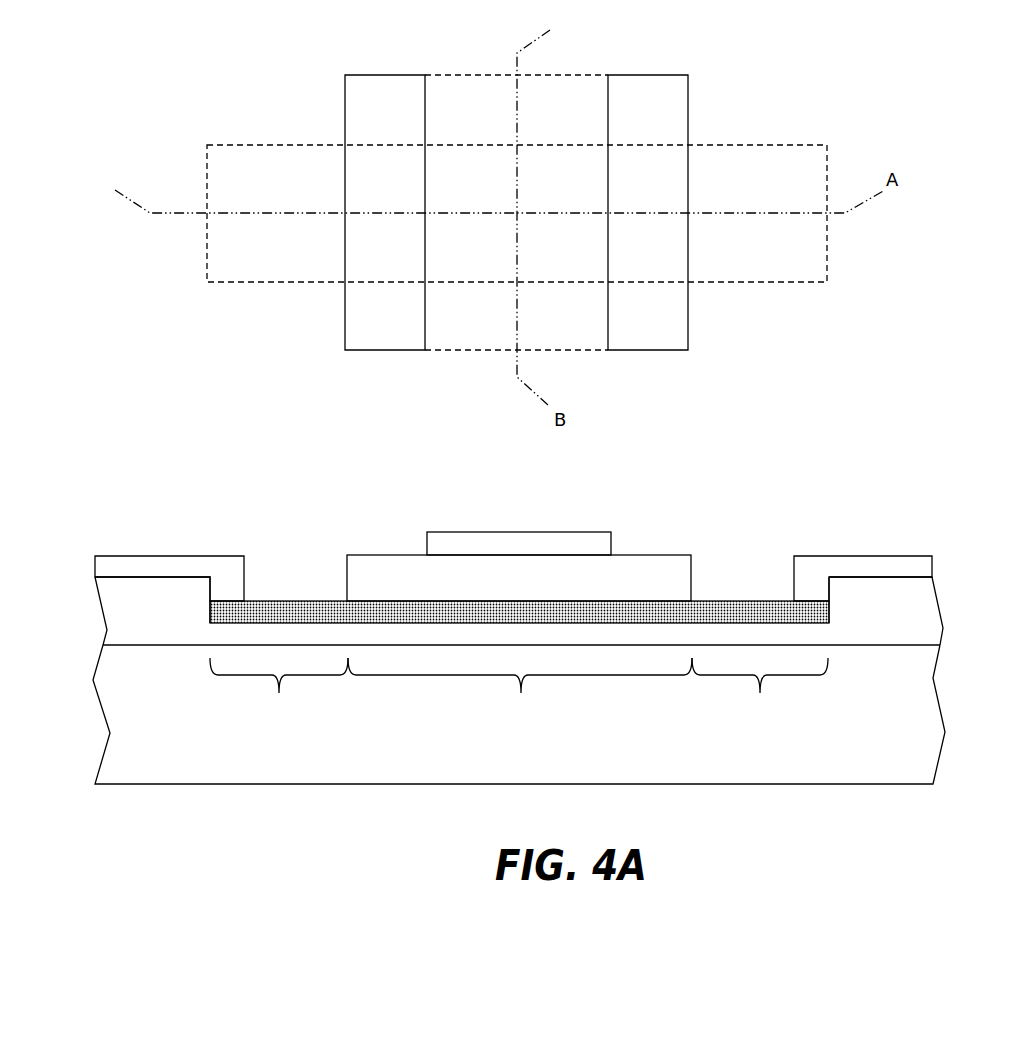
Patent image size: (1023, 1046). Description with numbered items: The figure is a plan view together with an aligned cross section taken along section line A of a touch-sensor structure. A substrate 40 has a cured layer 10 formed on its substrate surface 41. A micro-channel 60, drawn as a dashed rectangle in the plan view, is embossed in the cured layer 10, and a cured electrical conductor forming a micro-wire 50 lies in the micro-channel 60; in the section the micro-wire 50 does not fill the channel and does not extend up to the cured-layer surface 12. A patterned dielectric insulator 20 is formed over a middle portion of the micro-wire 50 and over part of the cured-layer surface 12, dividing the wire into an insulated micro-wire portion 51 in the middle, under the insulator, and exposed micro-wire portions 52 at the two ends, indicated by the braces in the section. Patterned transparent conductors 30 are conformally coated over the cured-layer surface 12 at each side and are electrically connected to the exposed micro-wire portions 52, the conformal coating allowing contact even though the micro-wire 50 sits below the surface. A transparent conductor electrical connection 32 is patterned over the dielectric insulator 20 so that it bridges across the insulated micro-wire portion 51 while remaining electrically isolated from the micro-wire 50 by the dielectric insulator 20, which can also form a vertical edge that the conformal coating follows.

The cured layer 10 is at (943, 628).
The cured-layer surface 12 is at (152, 577).
The patterned dielectric insulator 20 is at (688, 327).
The patterned transparent conductor 30 is at (204, 556).
The transparent conductor electrical connection 32 is at (425, 135).
The substrate 40 is at (945, 732).
The substrate surface 41 is at (135, 647).
The micro-wire 50 is at (829, 601).
The insulated micro-wire portion 51 is at (520, 692).
The exposed micro-wire portion 52 is at (519, 692).
The micro-channel 60 is at (493, 282).